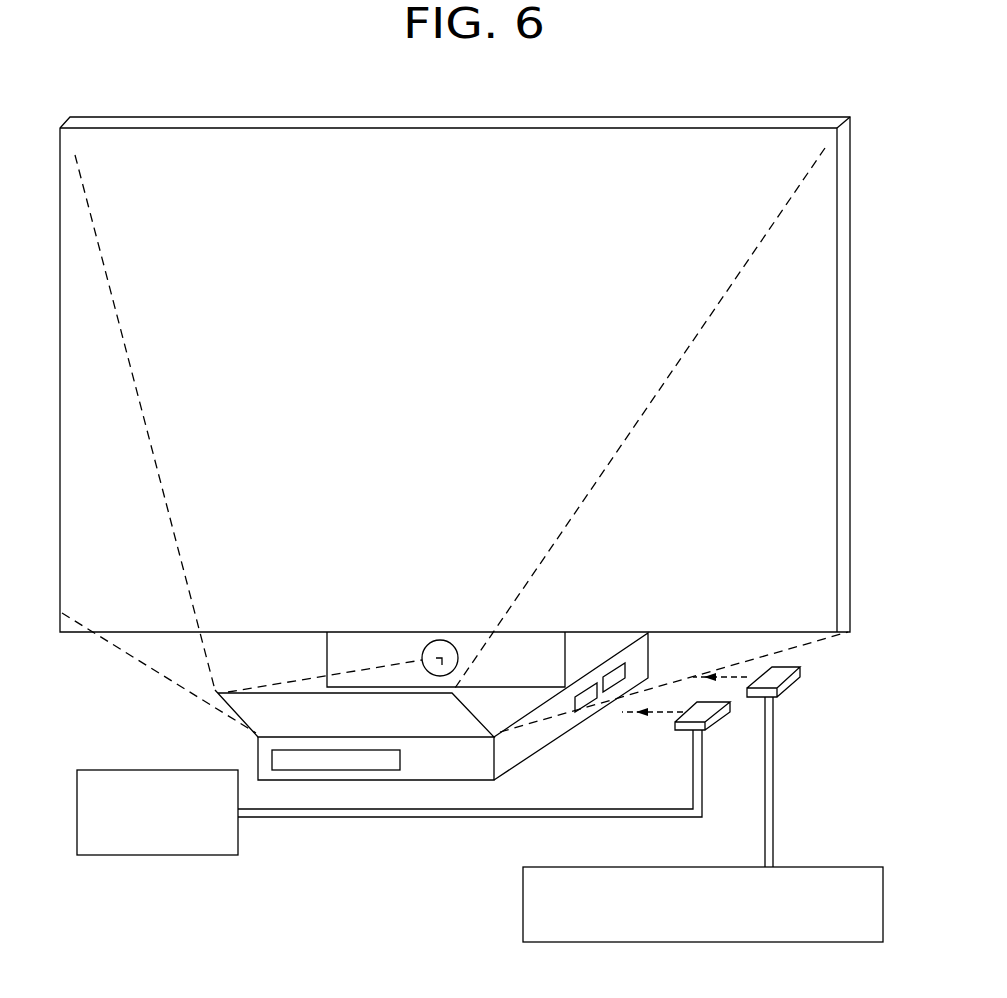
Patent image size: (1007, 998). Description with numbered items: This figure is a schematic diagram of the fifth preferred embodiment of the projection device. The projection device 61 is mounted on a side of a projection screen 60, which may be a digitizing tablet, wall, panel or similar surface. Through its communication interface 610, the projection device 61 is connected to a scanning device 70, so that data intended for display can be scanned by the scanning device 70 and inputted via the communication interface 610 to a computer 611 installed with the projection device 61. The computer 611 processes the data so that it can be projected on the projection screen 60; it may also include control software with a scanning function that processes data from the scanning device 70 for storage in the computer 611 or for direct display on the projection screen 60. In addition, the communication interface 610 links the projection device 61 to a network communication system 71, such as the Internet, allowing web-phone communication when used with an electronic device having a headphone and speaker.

The projection screen 60 is at (806, 122).
The projection device 61 is at (533, 763).
The communication interface 610 is at (592, 700).
The computer 611 is at (452, 760).
The scanning device 70 is at (238, 838).
The network communication system 71 is at (523, 903).